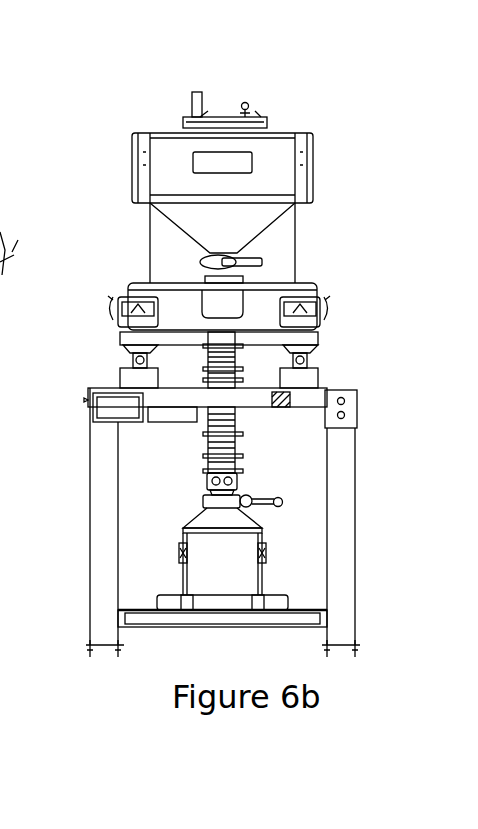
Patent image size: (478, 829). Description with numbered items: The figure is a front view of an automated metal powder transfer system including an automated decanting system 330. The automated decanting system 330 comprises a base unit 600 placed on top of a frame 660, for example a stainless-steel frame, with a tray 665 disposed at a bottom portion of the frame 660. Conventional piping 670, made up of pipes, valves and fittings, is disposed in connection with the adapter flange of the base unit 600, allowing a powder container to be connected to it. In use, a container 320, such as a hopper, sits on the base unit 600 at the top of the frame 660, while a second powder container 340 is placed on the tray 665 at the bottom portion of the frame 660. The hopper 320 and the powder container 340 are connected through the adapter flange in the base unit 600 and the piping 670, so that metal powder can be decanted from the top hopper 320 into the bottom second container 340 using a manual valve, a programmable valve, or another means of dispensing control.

The container 320 is at (272, 153).
The base unit 600 is at (305, 362).
The tray 665 is at (312, 389).
The frame 660 is at (355, 508).
The piping 670 is at (203, 470).
The second powder container 340 is at (230, 572).
The automated decanting system 330 is at (85, 668).